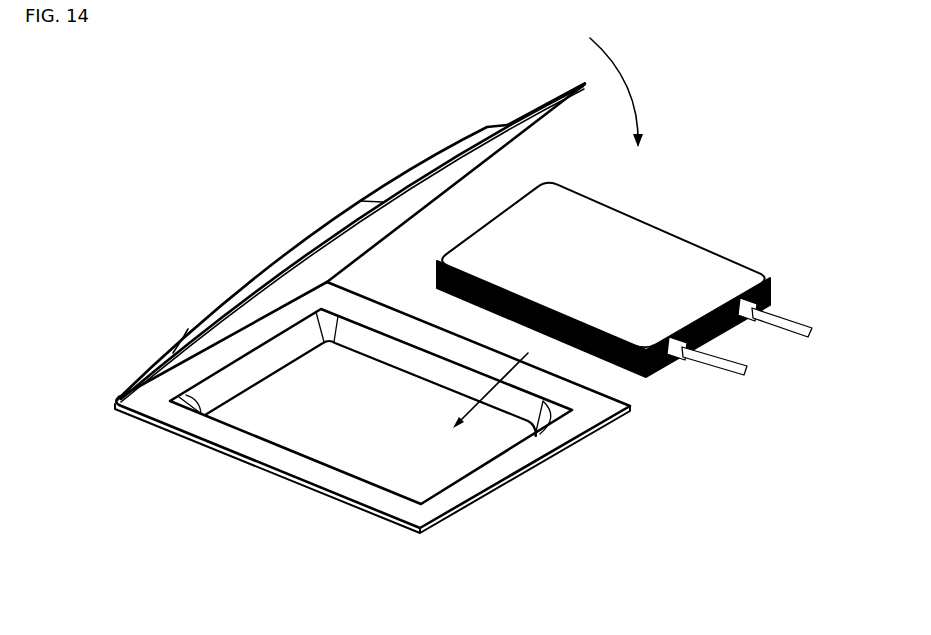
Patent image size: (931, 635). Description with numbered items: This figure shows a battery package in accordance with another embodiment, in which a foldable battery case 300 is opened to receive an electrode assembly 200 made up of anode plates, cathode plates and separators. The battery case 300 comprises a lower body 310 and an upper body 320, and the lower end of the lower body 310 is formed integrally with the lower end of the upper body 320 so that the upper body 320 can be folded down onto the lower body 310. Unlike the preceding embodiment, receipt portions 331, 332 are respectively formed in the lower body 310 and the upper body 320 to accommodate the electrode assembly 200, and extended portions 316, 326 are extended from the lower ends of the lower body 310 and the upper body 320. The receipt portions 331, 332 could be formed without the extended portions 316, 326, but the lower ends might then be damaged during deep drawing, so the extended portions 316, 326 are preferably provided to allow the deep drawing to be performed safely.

The battery case 300 is at (257, 108).
The lower body 310 is at (275, 488).
The extended portion 316 is at (172, 383).
The receipt portion 331 is at (420, 477).
The upper body 320 is at (520, 107).
The receipt portion 332 is at (327, 233).
The extended portion 326 is at (153, 378).
The electrode assembly 200 is at (683, 267).